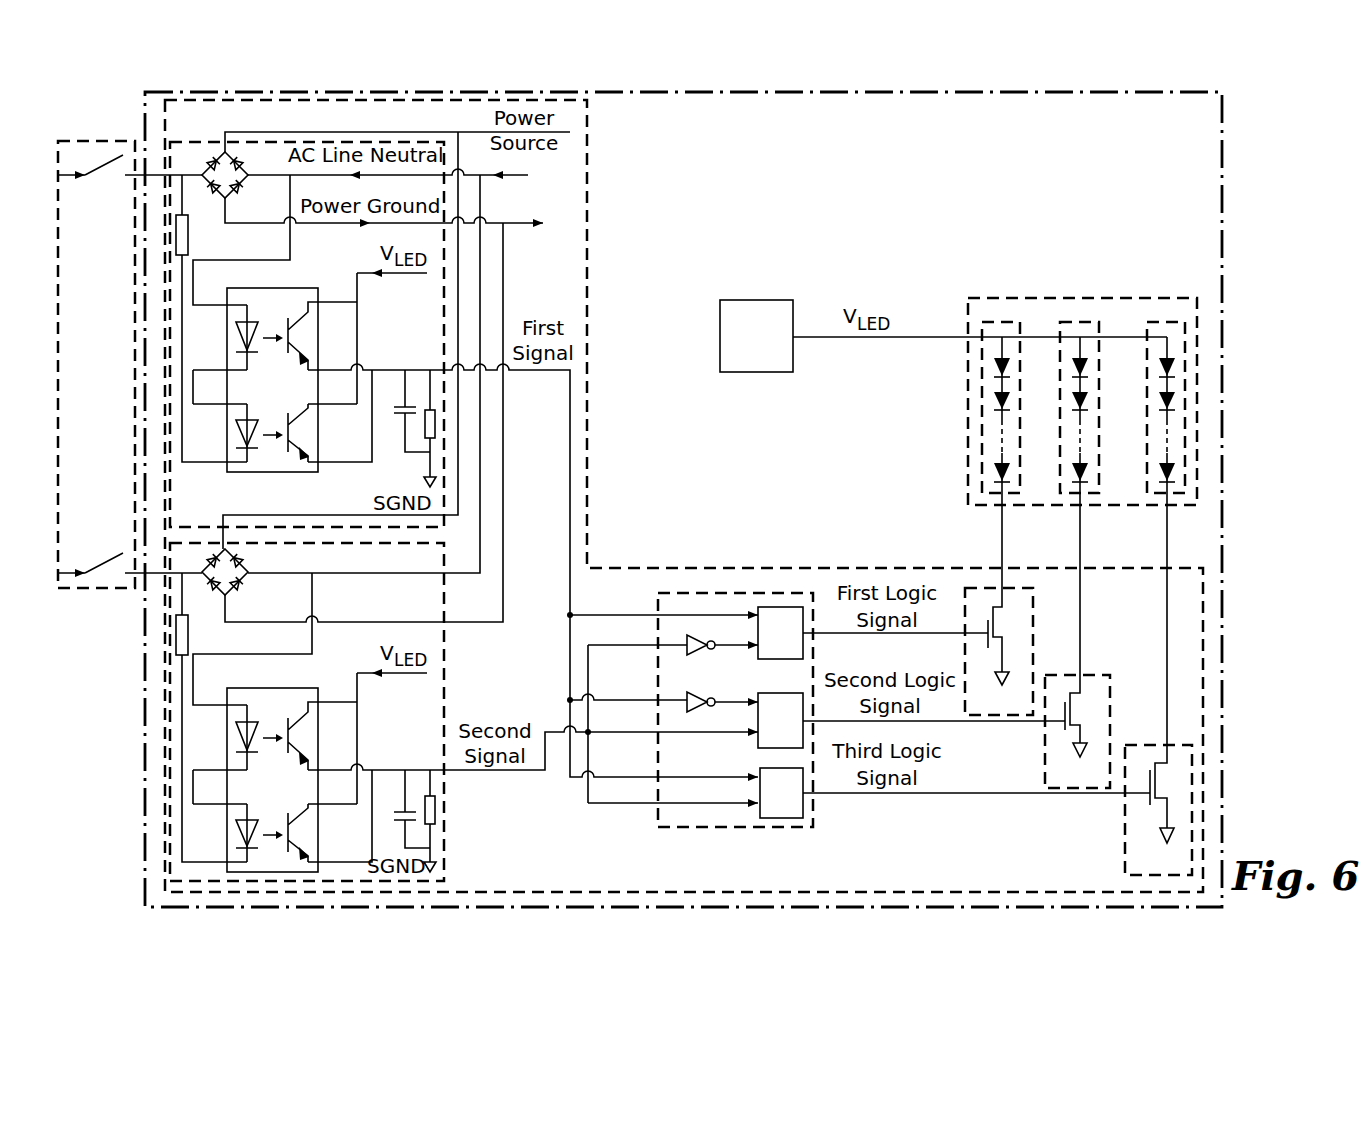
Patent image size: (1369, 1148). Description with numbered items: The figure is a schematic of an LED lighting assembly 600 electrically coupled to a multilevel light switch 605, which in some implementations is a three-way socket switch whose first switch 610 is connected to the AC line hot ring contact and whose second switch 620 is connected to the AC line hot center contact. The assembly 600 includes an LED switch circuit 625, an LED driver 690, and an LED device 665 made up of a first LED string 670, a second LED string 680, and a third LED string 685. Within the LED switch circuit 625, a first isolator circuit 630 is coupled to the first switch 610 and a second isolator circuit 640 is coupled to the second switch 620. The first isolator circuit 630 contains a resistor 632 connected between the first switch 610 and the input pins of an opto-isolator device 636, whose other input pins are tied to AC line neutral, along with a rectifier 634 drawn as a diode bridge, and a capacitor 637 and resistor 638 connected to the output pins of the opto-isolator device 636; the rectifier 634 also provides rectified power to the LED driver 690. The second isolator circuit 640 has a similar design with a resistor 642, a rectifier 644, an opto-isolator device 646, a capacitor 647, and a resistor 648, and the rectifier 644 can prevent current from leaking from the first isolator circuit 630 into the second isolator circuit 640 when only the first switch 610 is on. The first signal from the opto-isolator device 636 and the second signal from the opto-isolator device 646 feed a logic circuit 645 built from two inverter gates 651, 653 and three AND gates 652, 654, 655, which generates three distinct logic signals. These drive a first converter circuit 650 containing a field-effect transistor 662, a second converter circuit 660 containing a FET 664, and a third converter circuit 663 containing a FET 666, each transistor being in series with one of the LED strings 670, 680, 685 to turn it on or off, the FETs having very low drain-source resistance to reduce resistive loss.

The LED lighting assembly 600 is at (1232, 170).
The multilevel light switch 605 is at (93, 590).
The first switch 610 is at (87, 178).
The second switch 620 is at (87, 570).
The LED switch circuit 625 is at (1105, 575).
The first isolator circuit 630 is at (444, 305).
The resistor 632 is at (188, 238).
The rectifier 634 is at (233, 197).
The opto-isolator device 636 is at (273, 473).
The capacitor 637 is at (400, 417).
The resistor 638 is at (430, 410).
The second isolator circuit 640 is at (444, 690).
The resistor 642 is at (188, 633).
The rectifier 644 is at (233, 595).
The opto-isolator device 646 is at (237, 685).
The capacitor 647 is at (398, 812).
The resistor 648 is at (428, 797).
The logic circuit 645 is at (755, 830).
The inverter gate 651 is at (688, 640).
The AND gate 652 is at (777, 612).
The inverter gate 653 is at (695, 693).
The AND gate 654 is at (778, 697).
The AND gate 655 is at (772, 770).
The first converter circuit 650 is at (1013, 588).
The field-effect transistor 662 is at (987, 620).
The second converter circuit 660 is at (1045, 757).
The FET 664 is at (1063, 703).
The third converter circuit 663 is at (1125, 838).
The FET 666 is at (1150, 778).
The LED device 665 is at (968, 403).
The first LED string 670 is at (993, 322).
The second LED string 680 is at (1075, 322).
The third LED string 685 is at (1160, 322).
The LED driver 690 is at (720, 338).